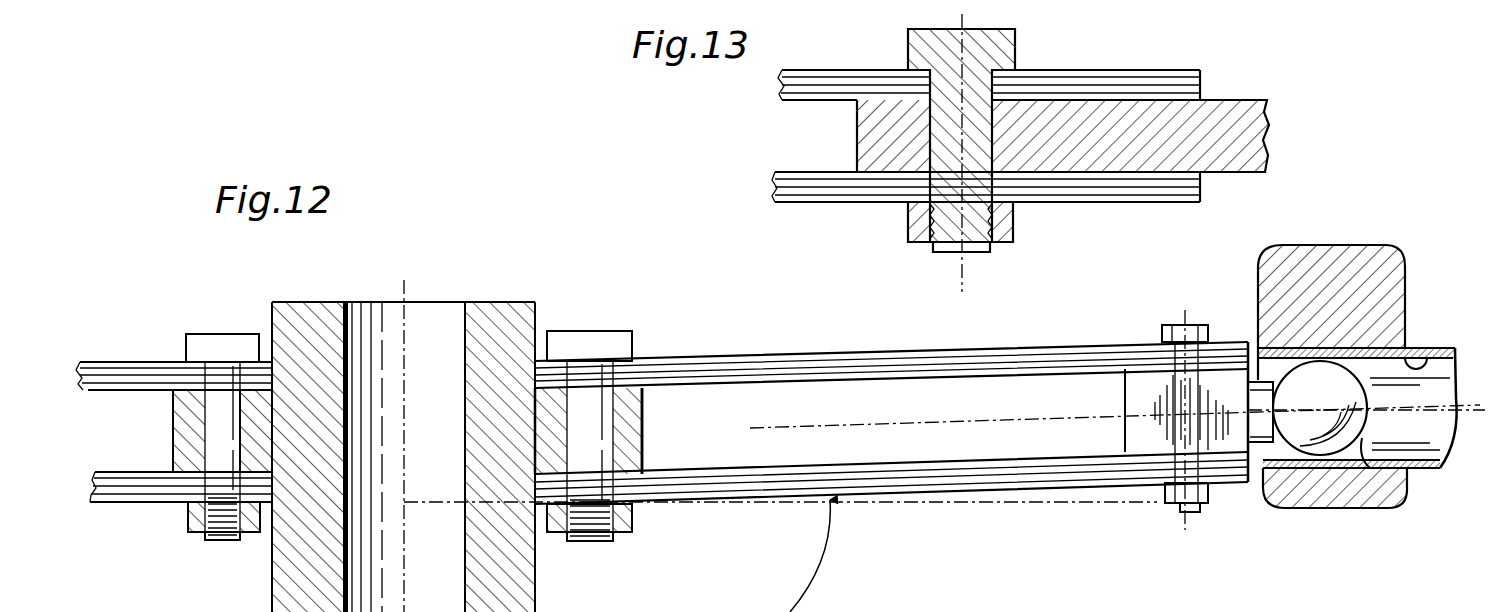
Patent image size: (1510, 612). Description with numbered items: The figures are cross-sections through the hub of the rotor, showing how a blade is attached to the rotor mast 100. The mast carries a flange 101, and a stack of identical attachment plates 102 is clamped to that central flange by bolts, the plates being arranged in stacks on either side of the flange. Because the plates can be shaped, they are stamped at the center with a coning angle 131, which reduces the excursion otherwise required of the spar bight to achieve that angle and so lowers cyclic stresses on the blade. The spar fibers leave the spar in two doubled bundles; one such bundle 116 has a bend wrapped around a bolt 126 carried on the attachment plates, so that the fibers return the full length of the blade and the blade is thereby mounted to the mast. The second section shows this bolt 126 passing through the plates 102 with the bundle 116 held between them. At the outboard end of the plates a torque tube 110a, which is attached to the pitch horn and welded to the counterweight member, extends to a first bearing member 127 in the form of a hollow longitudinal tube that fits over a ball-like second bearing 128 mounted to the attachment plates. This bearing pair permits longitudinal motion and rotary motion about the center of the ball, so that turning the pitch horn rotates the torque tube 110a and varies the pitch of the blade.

In FIG. 12, the rotor mast 100 is at (488, 302).
In FIG. 12, the flange 101 is at (645, 440).
In FIG. 12, the attachment plates 102 is at (742, 361).
In FIG. 13, the attachment plates 102 is at (1073, 70).
In FIG. 12, the torque tube 110a is at (1450, 348).
In FIG. 13, the bundle 116 is at (1230, 100).
In FIG. 13, the bolt 126 is at (972, 252).
In FIG. 12, the first bearing member 127 is at (1418, 360).
In FIG. 12, the second bearing 128 is at (1364, 482).
In FIG. 12, the coning angle 131 is at (808, 606).